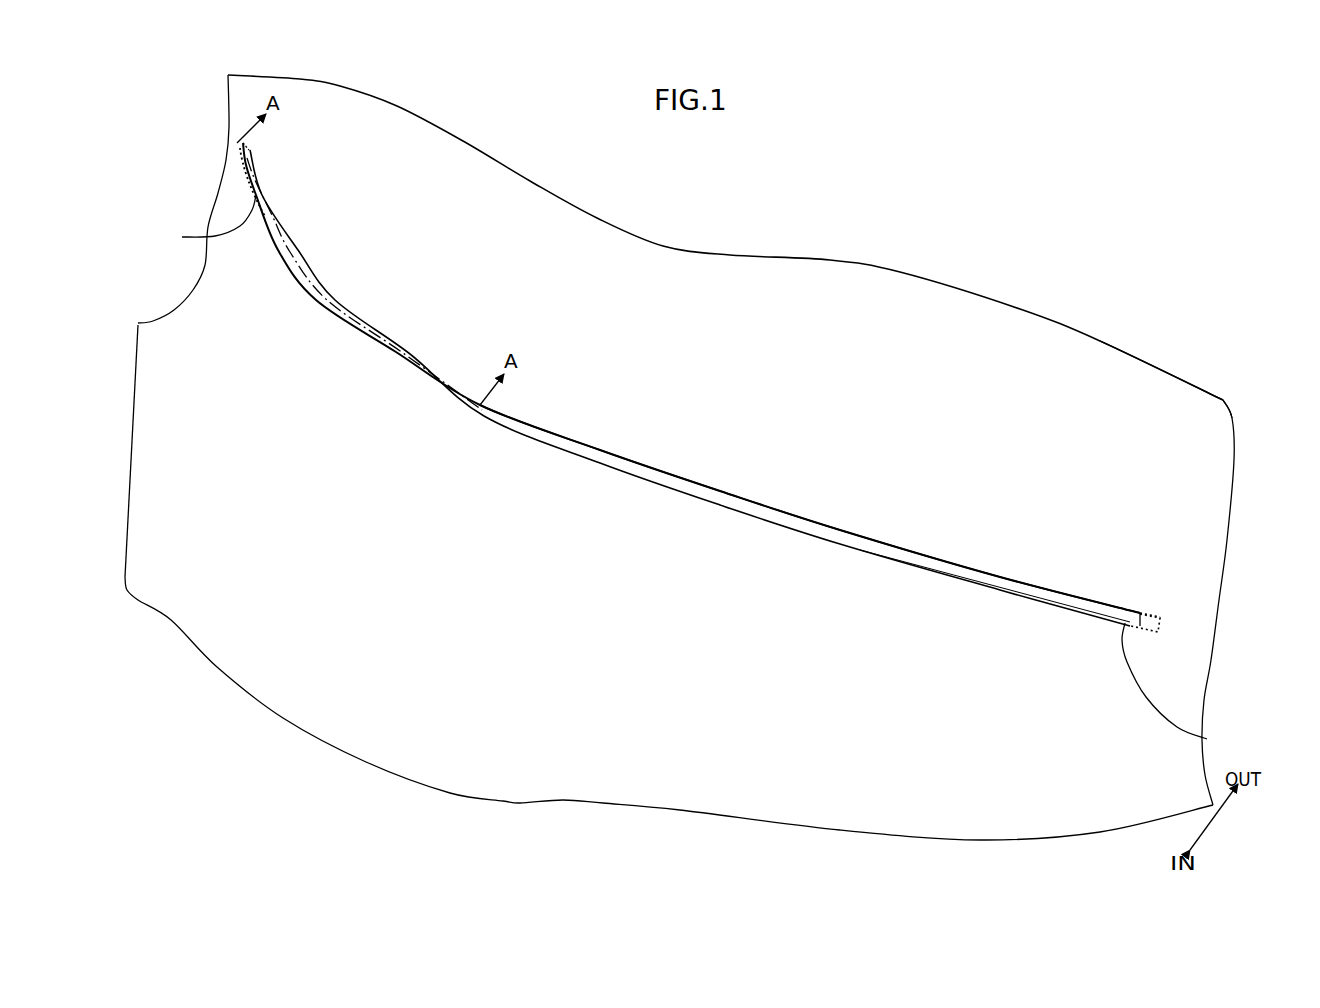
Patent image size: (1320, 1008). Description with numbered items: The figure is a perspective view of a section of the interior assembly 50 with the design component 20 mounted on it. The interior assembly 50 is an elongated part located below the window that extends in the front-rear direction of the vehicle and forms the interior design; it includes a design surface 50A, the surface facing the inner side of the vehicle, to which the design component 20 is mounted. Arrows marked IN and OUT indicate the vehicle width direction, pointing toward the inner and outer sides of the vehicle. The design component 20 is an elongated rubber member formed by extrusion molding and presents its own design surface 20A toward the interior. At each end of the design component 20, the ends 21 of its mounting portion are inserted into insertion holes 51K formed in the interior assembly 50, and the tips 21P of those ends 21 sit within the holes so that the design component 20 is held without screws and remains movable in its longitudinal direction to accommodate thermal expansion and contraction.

The interior assembly 50 is at (1147, 388).
The design surface 50A is at (1210, 413).
The design component 20 is at (993, 577).
The design surface 20A is at (925, 563).
The ends 21 is at (240, 150).
The tips 21P is at (240, 140).
The insertion holes 51K is at (1207, 739).